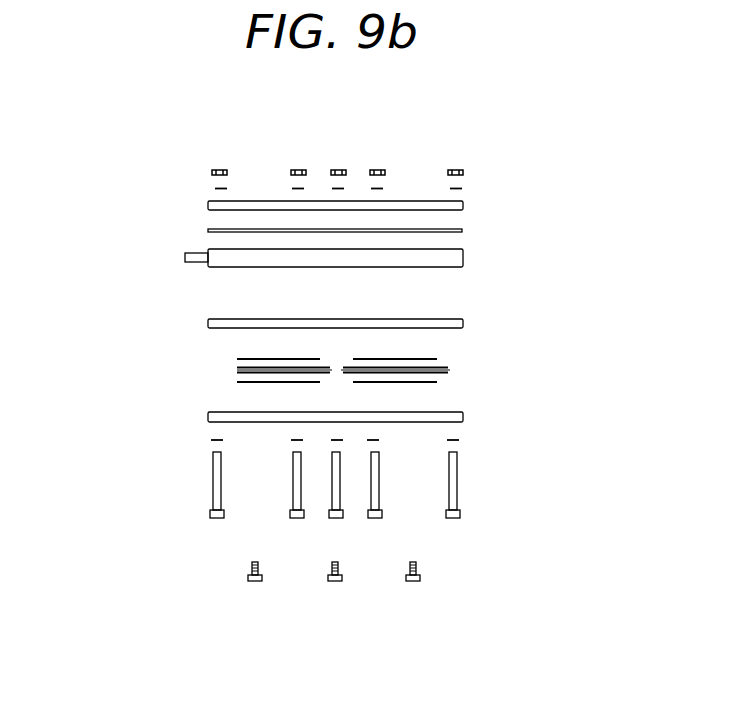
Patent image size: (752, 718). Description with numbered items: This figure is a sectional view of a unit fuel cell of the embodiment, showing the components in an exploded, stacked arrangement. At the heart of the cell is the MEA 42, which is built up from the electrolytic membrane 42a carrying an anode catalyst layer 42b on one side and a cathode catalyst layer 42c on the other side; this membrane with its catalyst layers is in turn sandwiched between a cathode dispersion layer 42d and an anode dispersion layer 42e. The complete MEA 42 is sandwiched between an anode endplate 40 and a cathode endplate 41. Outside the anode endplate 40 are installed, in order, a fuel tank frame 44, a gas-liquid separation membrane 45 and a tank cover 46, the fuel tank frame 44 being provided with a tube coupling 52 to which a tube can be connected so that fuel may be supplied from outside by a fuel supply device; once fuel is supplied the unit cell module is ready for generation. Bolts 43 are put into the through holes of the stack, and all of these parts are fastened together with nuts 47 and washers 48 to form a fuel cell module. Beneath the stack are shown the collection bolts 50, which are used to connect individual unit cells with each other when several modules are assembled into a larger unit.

The anode endplate 40 is at (460, 327).
The cathode endplate 41 is at (460, 418).
The MEA 42 is at (244, 366).
The electrolytic membrane 42a is at (237, 370).
The anode catalyst layer 42b is at (237, 367).
The cathode catalyst layer 42c is at (237, 373).
The cathode dispersion layer 42d is at (273, 413).
The anode dispersion layer 42e is at (237, 359).
The bolts 43 is at (210, 513).
The fuel tank frame 44 is at (462, 260).
The gas-liquid separation membrane 45 is at (460, 233).
The tank cover 46 is at (460, 207).
The nuts 47 is at (219, 170).
The washers 48 is at (215, 189).
The collection bolt 50 is at (247, 575).
The tube coupling 52 is at (190, 257).